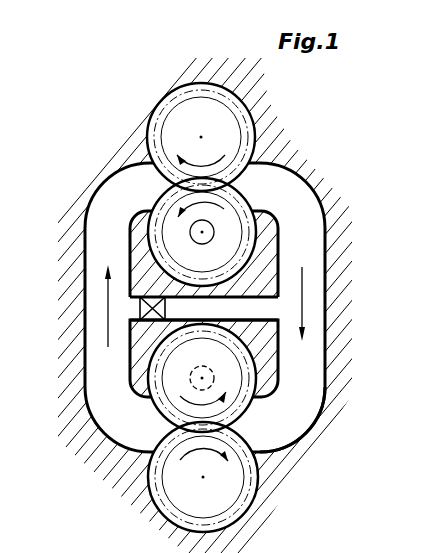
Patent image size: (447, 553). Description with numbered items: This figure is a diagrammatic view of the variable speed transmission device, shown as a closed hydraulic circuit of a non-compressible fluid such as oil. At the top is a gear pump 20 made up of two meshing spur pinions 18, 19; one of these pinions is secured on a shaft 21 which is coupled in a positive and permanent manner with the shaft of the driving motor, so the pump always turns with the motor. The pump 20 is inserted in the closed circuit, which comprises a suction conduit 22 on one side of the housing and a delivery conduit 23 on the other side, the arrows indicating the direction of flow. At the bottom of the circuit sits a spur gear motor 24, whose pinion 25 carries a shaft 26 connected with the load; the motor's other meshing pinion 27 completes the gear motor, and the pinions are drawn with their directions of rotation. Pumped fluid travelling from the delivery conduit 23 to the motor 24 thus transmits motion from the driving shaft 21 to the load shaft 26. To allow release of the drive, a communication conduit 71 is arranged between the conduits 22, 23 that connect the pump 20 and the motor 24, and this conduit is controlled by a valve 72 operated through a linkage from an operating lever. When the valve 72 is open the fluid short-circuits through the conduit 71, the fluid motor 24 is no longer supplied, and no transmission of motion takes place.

The spur pinion 18 is at (240, 233).
The spur pinion 19 is at (252, 106).
The gear pump 20 is at (262, 141).
The shaft 21 is at (213, 228).
The suction conduit 22 is at (97, 281).
The delivery conduit 23 is at (303, 247).
The spur gear motor 24 is at (257, 449).
The pinion 25 is at (240, 361).
The shaft 26 is at (218, 378).
The lower roller 27 is at (237, 490).
The communication conduit 71 is at (259, 307).
The valve 72 is at (140, 307).